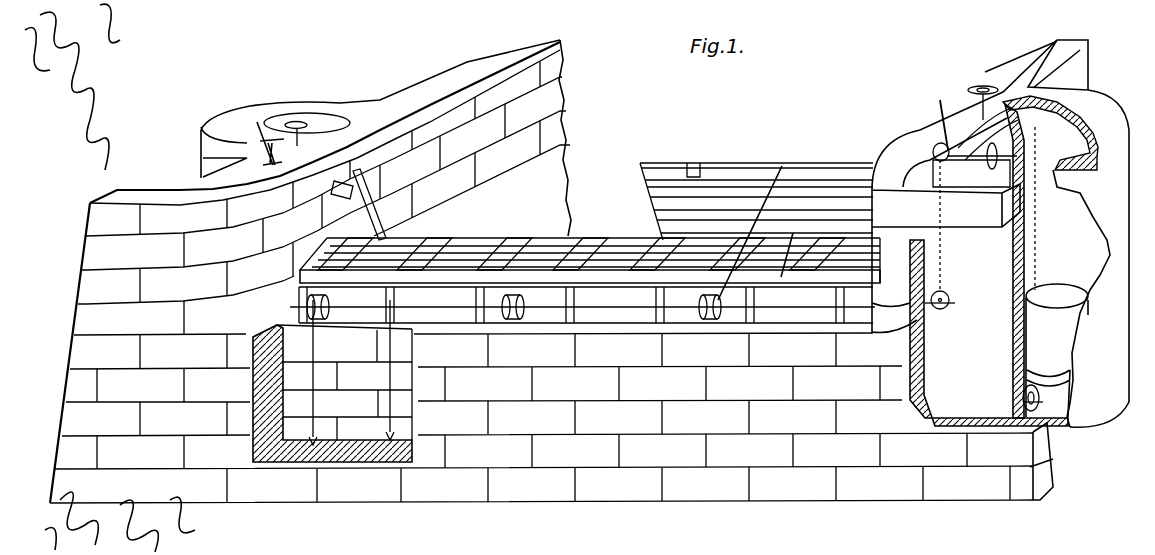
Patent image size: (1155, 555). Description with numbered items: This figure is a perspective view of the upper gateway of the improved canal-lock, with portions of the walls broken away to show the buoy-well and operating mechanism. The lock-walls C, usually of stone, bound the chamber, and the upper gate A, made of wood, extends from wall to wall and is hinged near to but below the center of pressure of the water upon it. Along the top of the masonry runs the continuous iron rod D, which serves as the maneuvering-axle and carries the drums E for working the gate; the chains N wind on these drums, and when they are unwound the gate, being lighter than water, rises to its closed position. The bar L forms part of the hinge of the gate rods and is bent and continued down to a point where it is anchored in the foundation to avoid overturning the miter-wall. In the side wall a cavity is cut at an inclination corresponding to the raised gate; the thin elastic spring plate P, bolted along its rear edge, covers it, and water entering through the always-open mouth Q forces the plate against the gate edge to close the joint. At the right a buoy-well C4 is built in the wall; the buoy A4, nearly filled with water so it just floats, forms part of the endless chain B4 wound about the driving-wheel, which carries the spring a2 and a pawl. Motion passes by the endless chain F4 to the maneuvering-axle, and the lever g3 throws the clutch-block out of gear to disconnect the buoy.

The lock-walls C is at (589, 271).
The buoy-well C4 is at (307, 123).
The spring a2 is at (648, 110).
The lever g3 is at (602, 132).
The mouth Q is at (342, 190).
The spring plate P is at (369, 204).
The upper gate A is at (756, 194).
The chains N is at (755, 233).
The continuous rod D is at (589, 280).
The drums E is at (582, 305).
The bar L is at (355, 372).
The endless chain B4 is at (989, 265).
The endless chain F4 is at (945, 234).
The buoy A4 is at (1055, 350).